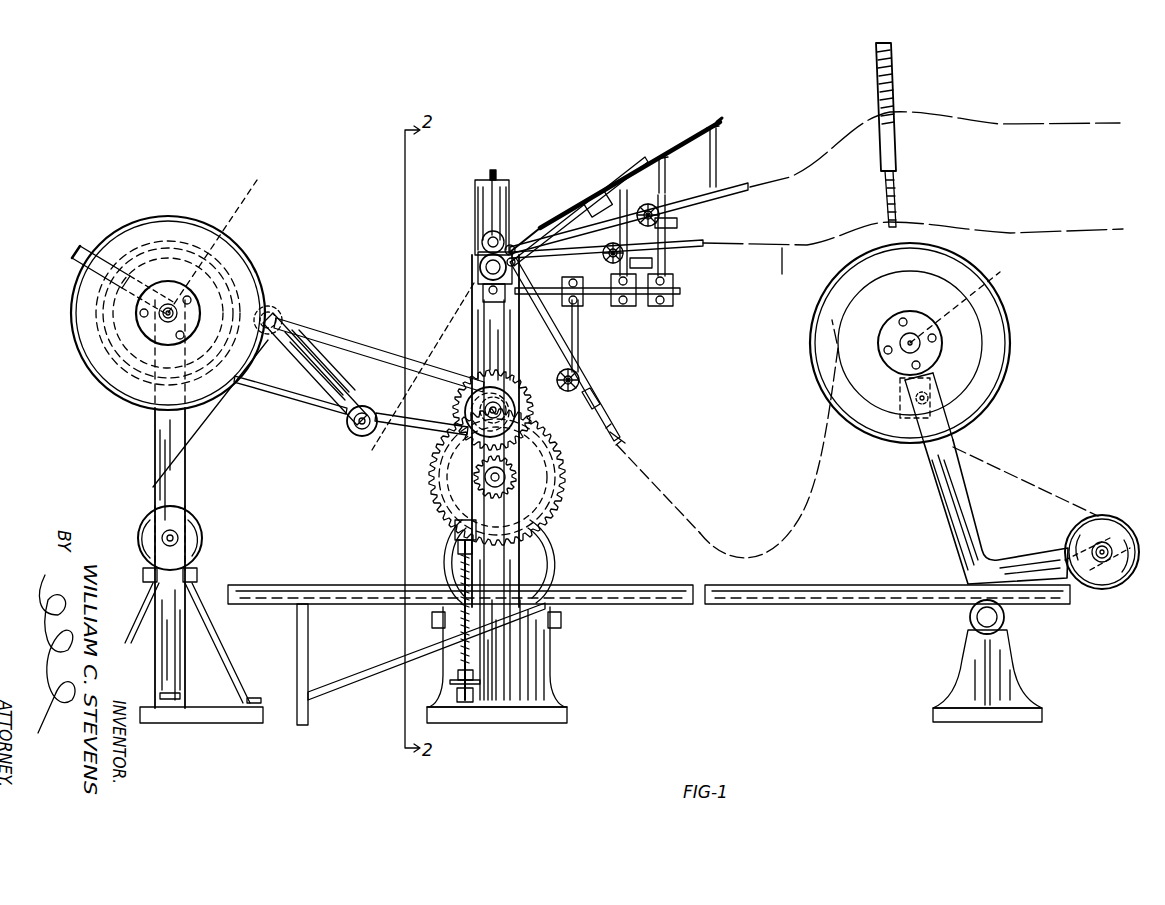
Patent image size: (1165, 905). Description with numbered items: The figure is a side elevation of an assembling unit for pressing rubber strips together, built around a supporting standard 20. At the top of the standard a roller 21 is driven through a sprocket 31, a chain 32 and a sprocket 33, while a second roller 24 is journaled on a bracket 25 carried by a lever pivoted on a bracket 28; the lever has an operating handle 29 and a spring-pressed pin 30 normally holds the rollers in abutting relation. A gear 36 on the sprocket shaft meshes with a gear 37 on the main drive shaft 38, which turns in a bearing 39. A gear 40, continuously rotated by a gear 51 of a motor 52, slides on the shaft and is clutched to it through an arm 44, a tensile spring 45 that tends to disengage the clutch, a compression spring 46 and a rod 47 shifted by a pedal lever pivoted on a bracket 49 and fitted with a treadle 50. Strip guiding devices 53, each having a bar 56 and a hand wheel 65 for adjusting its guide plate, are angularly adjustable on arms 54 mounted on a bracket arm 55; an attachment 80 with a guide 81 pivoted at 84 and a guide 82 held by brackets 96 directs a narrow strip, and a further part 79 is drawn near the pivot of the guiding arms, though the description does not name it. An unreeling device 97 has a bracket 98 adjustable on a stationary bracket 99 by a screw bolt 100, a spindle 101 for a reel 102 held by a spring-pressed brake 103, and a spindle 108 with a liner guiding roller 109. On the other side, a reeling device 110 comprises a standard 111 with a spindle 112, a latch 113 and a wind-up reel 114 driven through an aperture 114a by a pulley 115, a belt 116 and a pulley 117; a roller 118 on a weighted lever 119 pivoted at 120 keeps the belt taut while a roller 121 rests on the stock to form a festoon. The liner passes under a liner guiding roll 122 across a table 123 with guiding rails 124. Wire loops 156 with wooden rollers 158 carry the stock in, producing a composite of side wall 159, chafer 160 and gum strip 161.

The supporting standard 20 is at (532, 556).
The roller 21 is at (478, 266).
The second roller 24 is at (511, 246).
The bracket 25 is at (484, 230).
The bracket 28 is at (510, 192).
The operating handle 29 is at (497, 176).
The spring-pressed pin 30 is at (491, 176).
The sprocket 31 is at (480, 254).
The chain 32 is at (423, 366).
The sprocket 33 is at (522, 426).
The gear 36 is at (526, 402).
The gear 37 is at (520, 476).
The main drive shaft 38 is at (432, 480).
The bearing 39 is at (466, 412).
The gear 40 is at (435, 496).
The arm 44 is at (452, 525).
The tensile spring 45 is at (460, 567).
The compression spring 46 is at (458, 548).
The rod 47 is at (455, 675).
The bracket 49 is at (455, 700).
The treadle 50 is at (450, 684).
The gear 51 is at (556, 542).
The motor 52 is at (546, 566).
The strip guiding device 53 is at (614, 424).
The arm 54 is at (625, 202).
The bracket arm 55 is at (592, 304).
The bar 56 is at (677, 224).
The hand wheel 65 is at (648, 227).
The pivot pin 79 is at (514, 254).
The attachment 80 is at (724, 196).
The guide 81 is at (592, 203).
The guide 82 is at (682, 146).
The pivot 84 is at (598, 204).
The brackets 96 is at (672, 172).
The unreeling device 97 is at (985, 432).
The bracket 98 is at (950, 524).
The stationary bracket 99 is at (1006, 662).
The screw bolt 100 is at (975, 602).
The spindle 101 is at (922, 340).
The reel 102 is at (996, 366).
The spring-pressed brake 103 is at (940, 396).
The spindle 108 is at (1103, 545).
The liner guiding roller 109 is at (1116, 584).
The reeling device 110 is at (140, 392).
The standard 111 is at (180, 480).
The spindle 112 is at (175, 308).
The latch 113 is at (168, 321).
The wind-up reel 114 is at (138, 236).
The aperture 114a is at (598, 246).
The pulley 115 is at (120, 353).
The belt 116 is at (350, 348).
The pulley 117 is at (467, 400).
The roller 118 is at (264, 304).
The weighted lever 119 is at (282, 322).
The pivot 120 is at (172, 283).
The roller 121 is at (364, 437).
The liner guiding roll 122 is at (204, 535).
The table 123 is at (661, 605).
The guiding rails 124 is at (270, 586).
The wire loops 156 is at (888, 133).
The wooden rollers 158 is at (897, 195).
The side wall 159 is at (696, 526).
The chafer 160 is at (776, 277).
The gum strip 161 is at (724, 120).